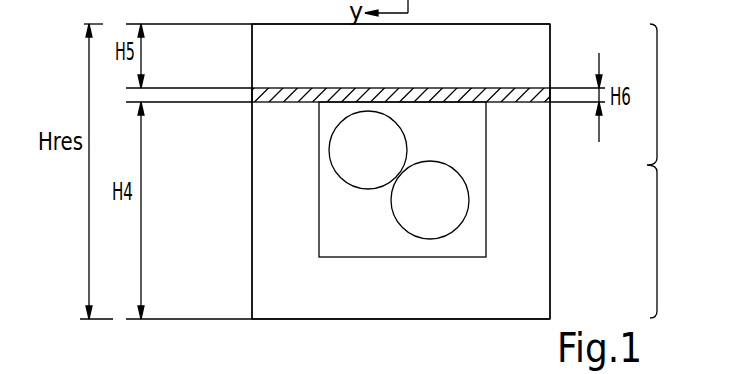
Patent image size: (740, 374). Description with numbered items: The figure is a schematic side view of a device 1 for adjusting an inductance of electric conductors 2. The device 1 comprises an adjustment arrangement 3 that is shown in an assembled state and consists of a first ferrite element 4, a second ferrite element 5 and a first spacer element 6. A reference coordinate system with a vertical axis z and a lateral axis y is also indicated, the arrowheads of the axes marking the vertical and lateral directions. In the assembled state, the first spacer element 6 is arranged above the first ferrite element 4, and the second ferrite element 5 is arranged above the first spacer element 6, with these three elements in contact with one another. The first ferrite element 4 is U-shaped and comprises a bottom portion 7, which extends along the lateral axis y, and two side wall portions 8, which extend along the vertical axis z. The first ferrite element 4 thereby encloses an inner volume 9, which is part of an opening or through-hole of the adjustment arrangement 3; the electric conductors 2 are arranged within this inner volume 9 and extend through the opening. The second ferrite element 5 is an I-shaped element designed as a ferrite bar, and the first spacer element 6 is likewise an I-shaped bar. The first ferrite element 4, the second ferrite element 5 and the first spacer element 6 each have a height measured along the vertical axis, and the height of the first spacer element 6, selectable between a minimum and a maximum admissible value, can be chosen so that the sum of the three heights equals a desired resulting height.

The device 1 is at (84, 334).
The electric conductors 2 is at (352, 153).
The adjustment arrangement 3 is at (665, 171).
The first ferrite element 4 is at (552, 258).
The second ferrite element 5 is at (552, 48).
The first spacer element 6 is at (248, 93).
The bottom portion 7 is at (422, 311).
The side wall portions 8 is at (271, 207).
The inner volume 9 is at (465, 142).